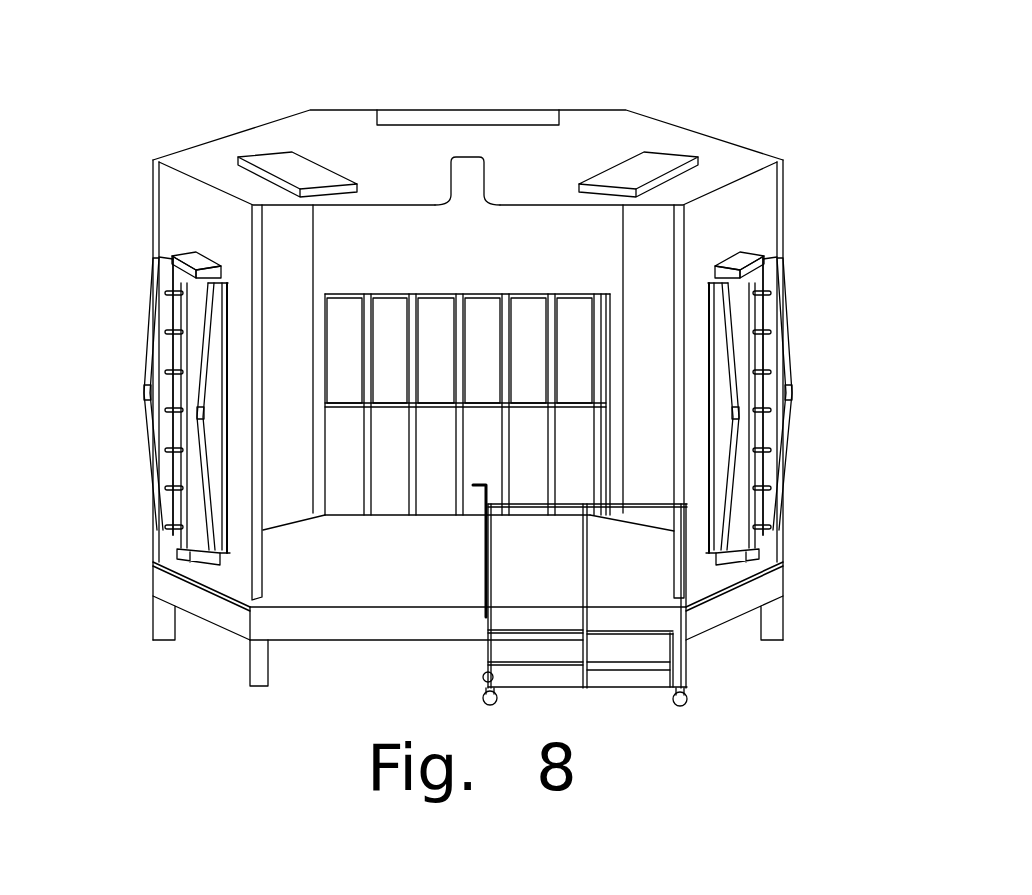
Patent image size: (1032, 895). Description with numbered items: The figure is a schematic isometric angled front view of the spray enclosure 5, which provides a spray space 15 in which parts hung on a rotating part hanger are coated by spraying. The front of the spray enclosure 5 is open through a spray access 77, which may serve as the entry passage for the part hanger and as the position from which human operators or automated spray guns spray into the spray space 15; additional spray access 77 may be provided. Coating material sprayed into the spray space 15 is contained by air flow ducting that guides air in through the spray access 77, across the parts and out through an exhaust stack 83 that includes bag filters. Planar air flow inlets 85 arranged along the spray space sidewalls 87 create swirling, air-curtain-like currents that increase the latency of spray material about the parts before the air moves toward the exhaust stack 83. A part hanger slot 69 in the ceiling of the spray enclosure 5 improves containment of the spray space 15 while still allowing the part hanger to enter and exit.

The spray enclosure 5 is at (443, 92).
The spray space 15 is at (501, 258).
The part hanger slot 69 is at (467, 183).
The spray access 77 is at (421, 258).
The exhaust stack 83 is at (396, 463).
The planar air flow inlet 85 is at (211, 415).
The spray space sidewall 87 is at (287, 297).